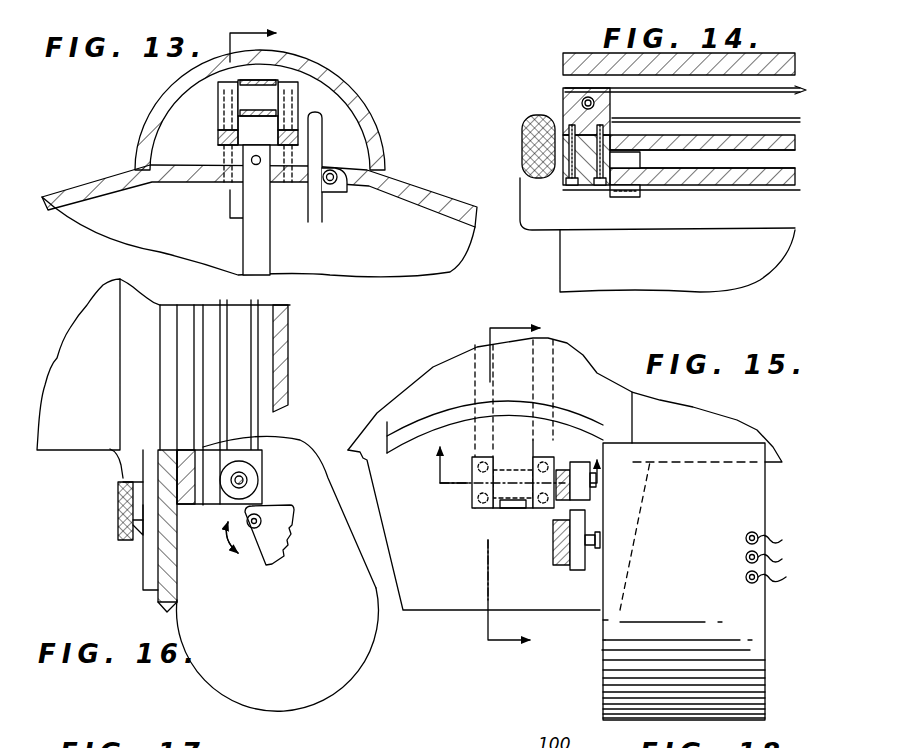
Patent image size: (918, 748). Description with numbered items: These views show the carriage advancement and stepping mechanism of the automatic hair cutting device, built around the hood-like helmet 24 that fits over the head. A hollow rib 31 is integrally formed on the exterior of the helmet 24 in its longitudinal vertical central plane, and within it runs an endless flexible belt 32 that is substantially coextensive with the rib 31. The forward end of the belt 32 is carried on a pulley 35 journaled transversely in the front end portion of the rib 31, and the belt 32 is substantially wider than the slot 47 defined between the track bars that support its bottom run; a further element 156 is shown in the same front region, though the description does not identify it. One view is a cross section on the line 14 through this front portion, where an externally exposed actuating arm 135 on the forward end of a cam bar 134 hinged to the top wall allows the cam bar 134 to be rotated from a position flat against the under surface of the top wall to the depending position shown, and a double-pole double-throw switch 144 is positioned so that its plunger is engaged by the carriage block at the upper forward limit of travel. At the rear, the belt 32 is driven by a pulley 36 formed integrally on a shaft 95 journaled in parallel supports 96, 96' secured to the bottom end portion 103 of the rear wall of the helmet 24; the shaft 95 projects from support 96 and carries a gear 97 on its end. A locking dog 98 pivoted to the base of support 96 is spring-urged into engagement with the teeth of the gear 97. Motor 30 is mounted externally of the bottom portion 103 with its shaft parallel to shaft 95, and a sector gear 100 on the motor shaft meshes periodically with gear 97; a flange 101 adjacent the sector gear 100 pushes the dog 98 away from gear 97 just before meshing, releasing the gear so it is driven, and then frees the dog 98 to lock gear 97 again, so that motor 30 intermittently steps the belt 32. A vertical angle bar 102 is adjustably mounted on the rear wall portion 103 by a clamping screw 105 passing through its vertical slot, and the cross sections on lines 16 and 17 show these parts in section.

In FIG. 13, the section line 14- 14 is at (247, 129).
In FIG. 15, the section line 16- 16 is at (514, 485).
In FIG. 15, the section line 17- 17 is at (533, 465).
In FIG. 13, the helmet 24 is at (432, 200).
In FIG. 14, the helmet 24 is at (560, 270).
In FIG. 16, the helmet 24 is at (55, 448).
In FIG. 15, the helmet 24 is at (352, 450).
In FIG. 16, the motor 30 is at (337, 525).
In FIG. 15, the motor 30 is at (622, 640).
In FIG. 13, the hollow rib 31 is at (356, 106).
In FIG. 14, the hollow rib 31 is at (575, 62).
In FIG. 16, the hollow rib 31 is at (292, 340).
In FIG. 15, the hollow rib 31 is at (610, 392).
In FIG. 13, the endless flexible belt 32 is at (262, 80).
In FIG. 14, the endless flexible belt 32 is at (690, 122).
In FIG. 16, the endless flexible belt 32 is at (224, 415).
In FIG. 15, the endless flexible belt 32 is at (535, 433).
In FIG. 13, the pulley 35 is at (248, 96).
In FIG. 14, the pulley 35 is at (570, 96).
In FIG. 16, the pulley 36 is at (250, 477).
In FIG. 15, the pulley 36 is at (505, 470).
In FIG. 13, the slot 47 is at (222, 135).
In FIG. 14, the slot 47 is at (795, 125).
In FIG. 16, the shaft 95 is at (258, 486).
In FIG. 15, the shaft 95 is at (475, 483).
In FIG. 15, the support 96 is at (530, 532).
In FIG. 15, the support 96' is at (468, 532).
In FIG. 15, the gear 97 is at (560, 495).
In FIG. 15, the locking dog 98 is at (578, 468).
In FIG. 16, the sector gear 100 is at (272, 548).
In FIG. 15, the sector gear 100 is at (557, 548).
In FIG. 16, the flange 101 is at (287, 540).
In FIG. 15, the flange 101 is at (575, 568).
In FIG. 16, the vertical angle bar 102 is at (130, 382).
In FIG. 15, the vertical angle bar 102 is at (472, 375).
In FIG. 16, the bottom end portion of rear wall 103 is at (156, 603).
In FIG. 15, the bottom end portion of rear wall 103 is at (436, 602).
In FIG. 16, the clamping screw 105 is at (125, 543).
In FIG. 13, the cam bar 134 is at (323, 210).
In FIG. 14, the cam bar 134 is at (702, 232).
In FIG. 13, the actuating arm 135 is at (325, 140).
In FIG. 14, the actuating arm 135 is at (535, 130).
In FIG. 13, the double-pole double-throw switch 144 is at (265, 185).
In FIG. 14, the double-pole double-throw switch 144 is at (628, 198).
In FIG. 13, the spacer 156 is at (240, 152).
In FIG. 14, the spacer 156 is at (640, 160).